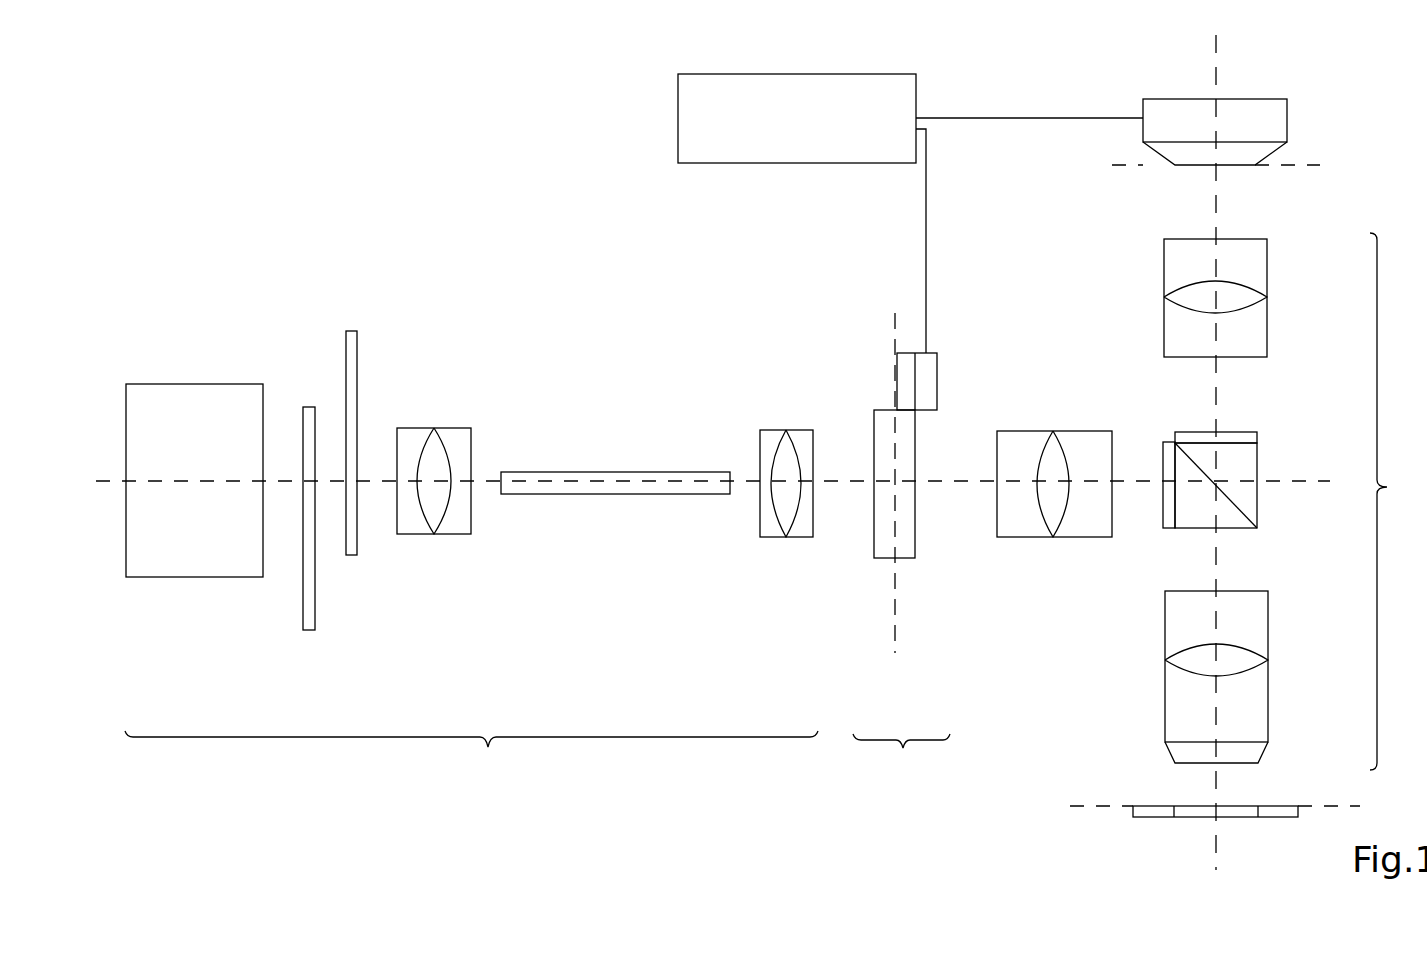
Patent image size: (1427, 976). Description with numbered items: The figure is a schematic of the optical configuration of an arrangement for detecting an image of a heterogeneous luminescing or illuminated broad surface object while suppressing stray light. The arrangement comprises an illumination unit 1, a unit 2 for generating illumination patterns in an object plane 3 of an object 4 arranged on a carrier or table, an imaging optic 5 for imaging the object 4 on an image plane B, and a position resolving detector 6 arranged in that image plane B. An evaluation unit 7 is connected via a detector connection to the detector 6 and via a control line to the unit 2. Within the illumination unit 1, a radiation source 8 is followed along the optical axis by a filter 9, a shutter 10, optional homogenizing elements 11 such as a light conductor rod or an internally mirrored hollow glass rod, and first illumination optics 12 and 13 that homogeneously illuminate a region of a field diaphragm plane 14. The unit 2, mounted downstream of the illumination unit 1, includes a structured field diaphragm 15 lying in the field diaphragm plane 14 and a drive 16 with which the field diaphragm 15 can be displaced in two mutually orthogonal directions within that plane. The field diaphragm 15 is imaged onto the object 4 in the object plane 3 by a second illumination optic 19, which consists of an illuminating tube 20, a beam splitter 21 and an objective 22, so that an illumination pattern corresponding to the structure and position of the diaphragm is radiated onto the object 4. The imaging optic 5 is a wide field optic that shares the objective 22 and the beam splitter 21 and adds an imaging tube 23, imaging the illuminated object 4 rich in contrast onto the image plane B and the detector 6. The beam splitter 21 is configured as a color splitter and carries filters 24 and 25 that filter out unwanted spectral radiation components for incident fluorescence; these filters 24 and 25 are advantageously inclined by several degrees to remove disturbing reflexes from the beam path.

The illumination unit 1 is at (471, 759).
The unit for generating illumination patterns 2 is at (901, 761).
The object plane 3 is at (1332, 807).
The object 4 is at (1185, 805).
The imaging optic 5 is at (1390, 501).
The position resolving detector 6 is at (1280, 120).
The evaluation unit 7 is at (790, 163).
The radiation source 8 is at (165, 568).
The filter 9 is at (303, 620).
The shutter 10 is at (350, 556).
The optical elements 11 is at (610, 494).
The first illumination optic 12 is at (452, 528).
The first illumination optic 13 is at (770, 537).
The field diaphragm plane 14 is at (895, 643).
The structured field diaphragm 15 is at (888, 452).
The drive 16 is at (927, 390).
The second illumination optic 19 is at (1063, 590).
The illuminating tube 20 is at (1018, 537).
The beam splitter 21 is at (1257, 512).
The objective 22 is at (1262, 695).
The imaging tube 23 is at (1260, 270).
The filter 24 is at (1172, 529).
The filter 25 is at (1257, 432).
The image plane B is at (1135, 165).